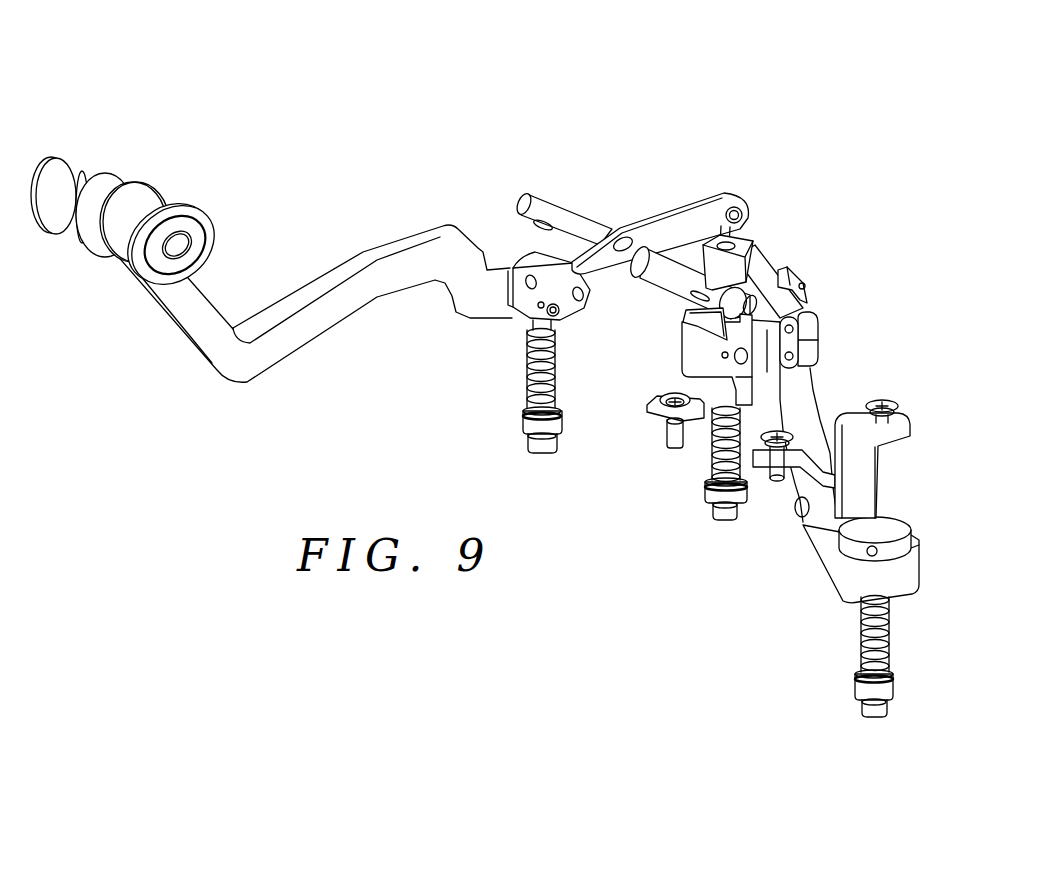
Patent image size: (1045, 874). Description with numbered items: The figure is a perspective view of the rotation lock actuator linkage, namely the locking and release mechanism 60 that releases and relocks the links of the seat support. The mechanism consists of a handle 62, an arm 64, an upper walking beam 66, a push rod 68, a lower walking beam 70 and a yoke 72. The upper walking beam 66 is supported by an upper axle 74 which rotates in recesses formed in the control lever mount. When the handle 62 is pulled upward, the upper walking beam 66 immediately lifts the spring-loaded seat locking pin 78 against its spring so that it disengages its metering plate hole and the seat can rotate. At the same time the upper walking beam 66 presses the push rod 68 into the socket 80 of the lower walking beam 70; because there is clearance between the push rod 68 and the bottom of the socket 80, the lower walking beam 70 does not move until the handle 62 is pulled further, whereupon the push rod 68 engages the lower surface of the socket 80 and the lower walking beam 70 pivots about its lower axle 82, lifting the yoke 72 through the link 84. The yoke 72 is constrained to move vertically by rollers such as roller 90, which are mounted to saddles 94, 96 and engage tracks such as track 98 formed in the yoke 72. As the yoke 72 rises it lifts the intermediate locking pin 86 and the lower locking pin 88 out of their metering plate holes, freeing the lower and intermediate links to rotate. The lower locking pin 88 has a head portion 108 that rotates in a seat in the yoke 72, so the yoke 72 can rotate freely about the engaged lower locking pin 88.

The locking and release mechanism 60 is at (222, 84).
The handle 62 is at (125, 185).
The arm 64 is at (378, 250).
The upper walking beam 66 is at (682, 203).
The push rod 68 is at (743, 237).
The lower walking beam 70 is at (758, 277).
The yoke 72 is at (825, 400).
The upper axle 74 is at (552, 208).
The seat locking pin 78 is at (527, 420).
The socket 80 is at (743, 240).
The lower axle 82 is at (792, 270).
The link 84 is at (822, 335).
The intermediate locking pin 86 is at (703, 497).
The lower locking pin 88 is at (862, 693).
The roller 90 is at (725, 355).
The saddle 94 is at (687, 418).
The saddle 96 is at (860, 573).
The track 98 is at (687, 390).
The head portion 108 is at (883, 527).